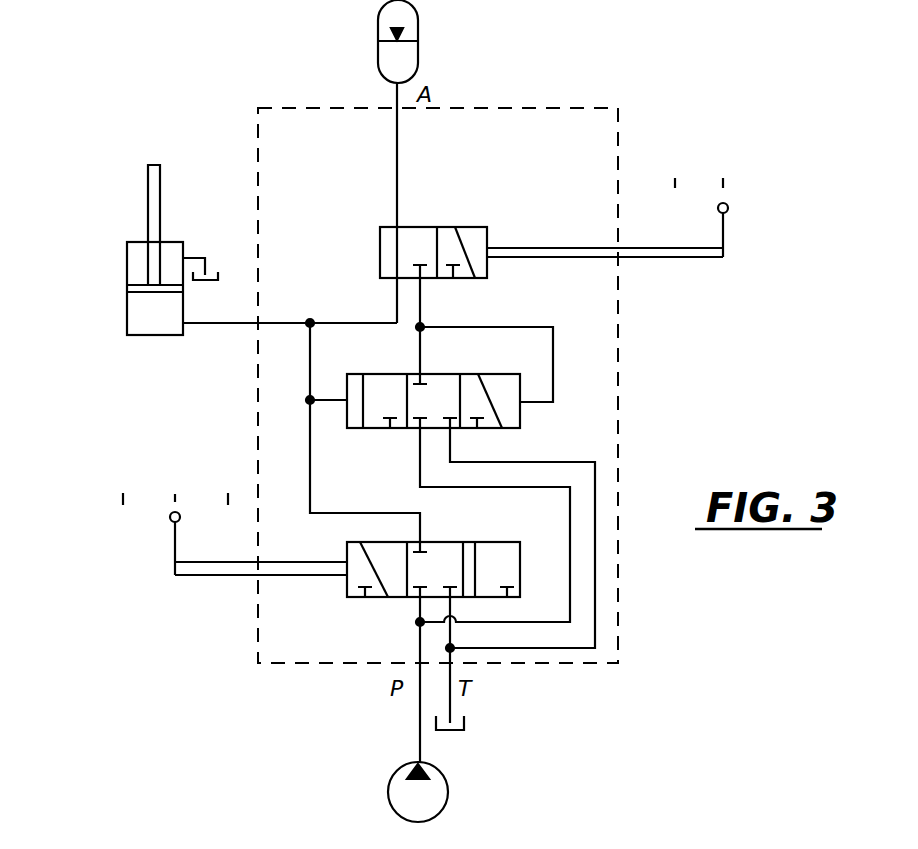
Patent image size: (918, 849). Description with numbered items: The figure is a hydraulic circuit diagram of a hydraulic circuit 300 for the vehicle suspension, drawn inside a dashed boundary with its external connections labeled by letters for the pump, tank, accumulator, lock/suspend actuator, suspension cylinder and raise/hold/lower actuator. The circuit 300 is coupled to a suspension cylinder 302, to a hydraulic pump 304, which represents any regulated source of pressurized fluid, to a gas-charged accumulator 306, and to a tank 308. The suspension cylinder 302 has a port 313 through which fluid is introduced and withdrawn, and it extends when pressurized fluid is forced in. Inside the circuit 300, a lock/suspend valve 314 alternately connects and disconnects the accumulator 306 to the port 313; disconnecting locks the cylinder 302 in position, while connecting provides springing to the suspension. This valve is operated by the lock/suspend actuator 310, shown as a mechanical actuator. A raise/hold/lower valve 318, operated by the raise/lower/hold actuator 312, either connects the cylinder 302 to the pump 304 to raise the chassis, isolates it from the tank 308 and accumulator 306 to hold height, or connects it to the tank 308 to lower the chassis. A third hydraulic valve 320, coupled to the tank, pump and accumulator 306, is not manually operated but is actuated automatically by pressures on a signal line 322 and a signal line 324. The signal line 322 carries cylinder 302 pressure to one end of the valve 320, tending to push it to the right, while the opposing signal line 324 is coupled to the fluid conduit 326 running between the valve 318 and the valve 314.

The hydraulic circuit 300 is at (305, 105).
The suspension cylinder 302 is at (148, 193).
The hydraulic pump 304 is at (448, 792).
The gas-charged accumulator 306 is at (418, 24).
The tank 308 is at (466, 724).
The lock/suspend actuator 310 is at (705, 262).
The raise/lower/hold actuator 312 is at (237, 580).
The port 313 is at (185, 333).
The lock/suspend valve 314 is at (455, 227).
The raise/hold/lower valve 318 is at (450, 542).
The hydraulic valve 320 is at (440, 374).
The signal line 322 is at (320, 398).
The signal line 324 is at (548, 326).
The fluid conduit 326 is at (422, 305).